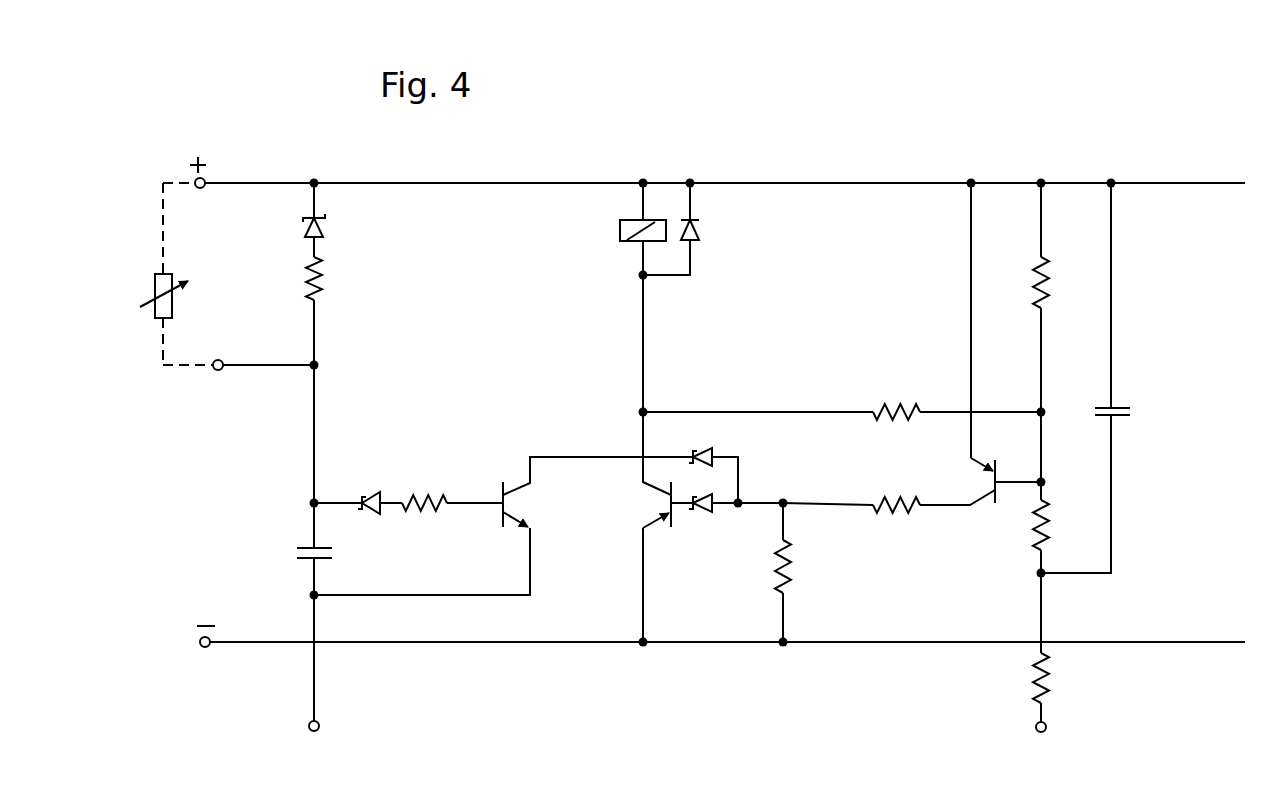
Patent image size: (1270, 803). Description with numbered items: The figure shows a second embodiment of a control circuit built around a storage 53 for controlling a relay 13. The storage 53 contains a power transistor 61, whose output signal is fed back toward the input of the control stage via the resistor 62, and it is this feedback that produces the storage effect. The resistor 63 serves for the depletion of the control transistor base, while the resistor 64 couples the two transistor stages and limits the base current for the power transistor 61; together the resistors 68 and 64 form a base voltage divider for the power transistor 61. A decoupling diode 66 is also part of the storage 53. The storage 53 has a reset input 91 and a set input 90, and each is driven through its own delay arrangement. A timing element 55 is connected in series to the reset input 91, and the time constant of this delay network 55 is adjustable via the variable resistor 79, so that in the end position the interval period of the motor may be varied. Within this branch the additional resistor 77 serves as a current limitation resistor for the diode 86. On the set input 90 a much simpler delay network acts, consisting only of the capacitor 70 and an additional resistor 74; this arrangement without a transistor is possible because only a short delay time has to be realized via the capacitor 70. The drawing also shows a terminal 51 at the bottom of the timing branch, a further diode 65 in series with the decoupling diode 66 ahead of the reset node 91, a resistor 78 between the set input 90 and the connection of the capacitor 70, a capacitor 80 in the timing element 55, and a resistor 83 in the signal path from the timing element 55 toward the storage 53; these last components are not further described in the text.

The relay 13 is at (625, 238).
The terminal 51 is at (320, 724).
The storage 53 is at (809, 304).
The timing element 55 is at (340, 322).
The power transistor 61 is at (657, 538).
The resistor 62 is at (905, 410).
The resistor 63 is at (1058, 278).
The resistor 64 is at (907, 512).
The zener diode 65 is at (703, 513).
The decoupling diode 66 is at (700, 452).
The resistor 68 is at (788, 573).
The capacitor 70 is at (1133, 410).
The additional resistor 74 is at (1046, 685).
The additional resistor 77 is at (313, 293).
The resistor 78 is at (1046, 530).
The variable resistor 79 is at (172, 307).
The capacitor 80 is at (333, 547).
The resistor 83 is at (437, 500).
The diode 86 is at (327, 232).
The set input 90 is at (1046, 482).
The reset input 91 is at (742, 501).